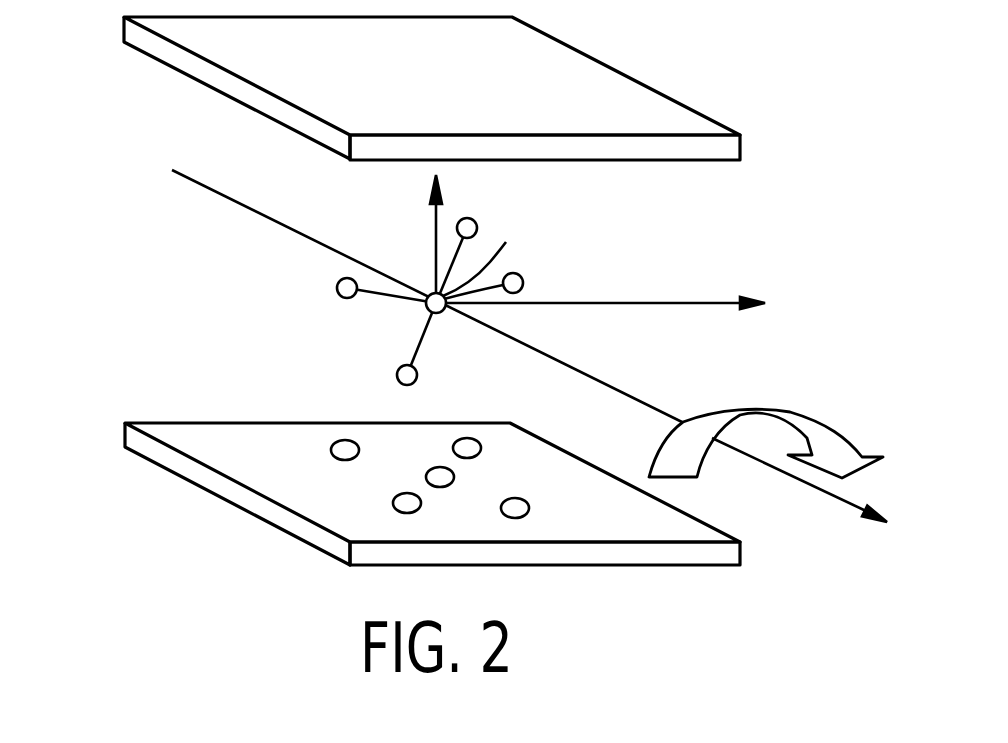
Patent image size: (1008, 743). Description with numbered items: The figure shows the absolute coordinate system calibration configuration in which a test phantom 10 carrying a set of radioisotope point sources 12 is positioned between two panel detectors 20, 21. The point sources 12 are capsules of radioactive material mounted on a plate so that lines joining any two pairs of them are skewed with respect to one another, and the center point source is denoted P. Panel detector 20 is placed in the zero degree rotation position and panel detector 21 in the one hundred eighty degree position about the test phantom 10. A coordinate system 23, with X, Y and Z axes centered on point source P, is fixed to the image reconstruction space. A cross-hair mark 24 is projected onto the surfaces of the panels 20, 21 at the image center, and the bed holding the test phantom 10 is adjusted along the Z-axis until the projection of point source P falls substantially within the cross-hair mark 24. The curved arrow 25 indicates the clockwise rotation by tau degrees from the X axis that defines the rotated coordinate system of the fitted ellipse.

The test phantom 10 is at (116, 290).
The radioisotope point sources 12 is at (337, 291).
The panel detector 20 is at (217, 497).
The panel detector 21 is at (218, 92).
The coordinate system 23 is at (645, 301).
The cross-hair mark 24 is at (441, 466).
The arrow 25 is at (830, 420).